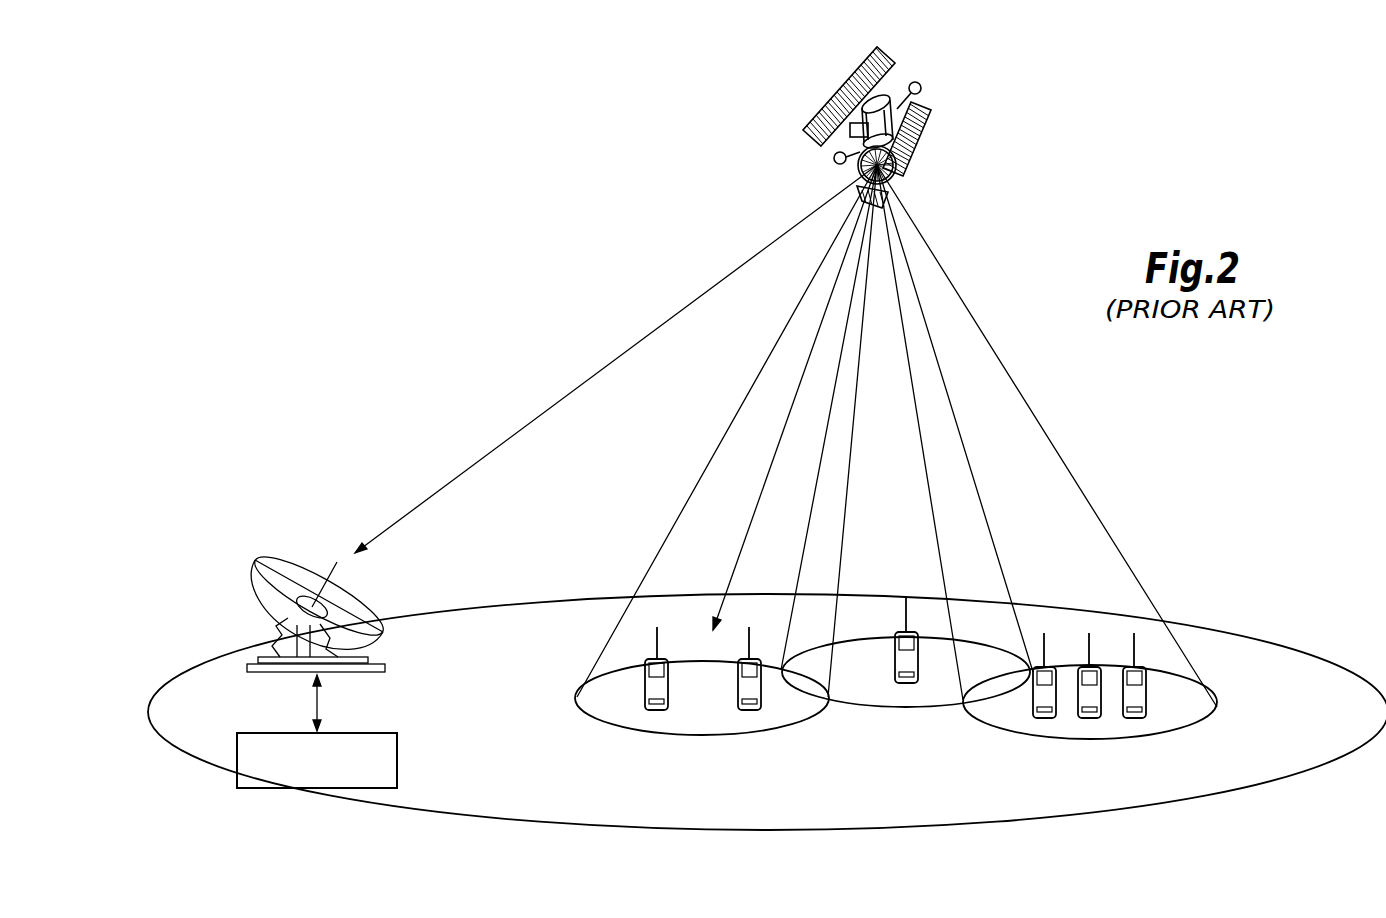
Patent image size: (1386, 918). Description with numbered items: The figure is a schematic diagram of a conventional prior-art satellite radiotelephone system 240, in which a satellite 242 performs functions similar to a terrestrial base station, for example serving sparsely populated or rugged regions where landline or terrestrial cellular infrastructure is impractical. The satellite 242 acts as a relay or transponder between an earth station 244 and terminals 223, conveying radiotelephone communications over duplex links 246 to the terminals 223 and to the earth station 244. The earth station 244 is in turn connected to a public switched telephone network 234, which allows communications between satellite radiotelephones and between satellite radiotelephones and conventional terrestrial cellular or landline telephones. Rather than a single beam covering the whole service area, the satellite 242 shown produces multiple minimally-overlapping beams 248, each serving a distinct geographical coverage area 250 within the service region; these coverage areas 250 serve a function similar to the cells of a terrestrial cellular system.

The satellite radiotelephone system 240 is at (578, 166).
The satellite 242 is at (954, 106).
The earth station 244 is at (277, 672).
The public switched telephone network 234 is at (397, 762).
The duplex links 246 is at (577, 383).
The multiple minimally-overlapping beams 248 is at (730, 418).
The geographical coverage areas 250 is at (712, 735).
The terminals 223 is at (642, 700).